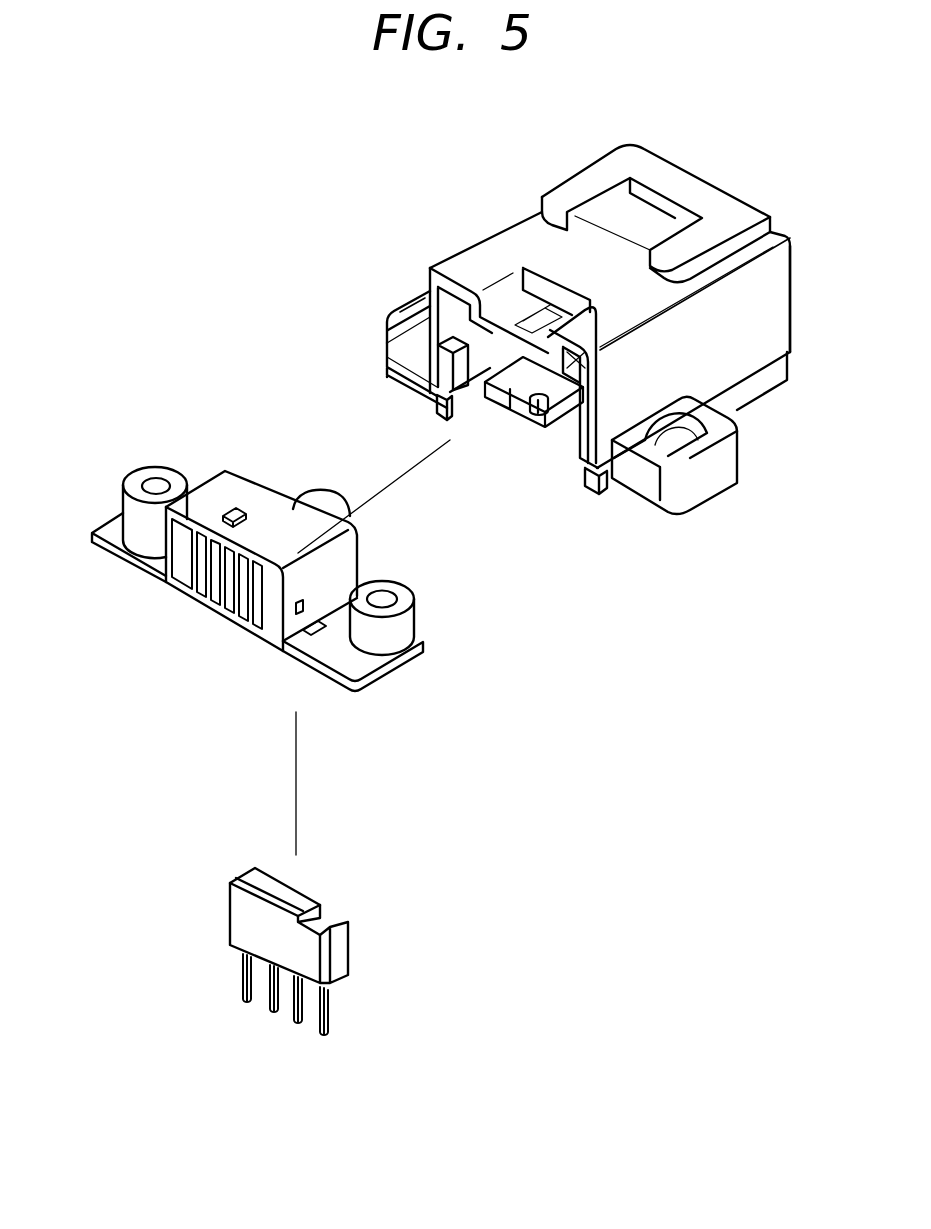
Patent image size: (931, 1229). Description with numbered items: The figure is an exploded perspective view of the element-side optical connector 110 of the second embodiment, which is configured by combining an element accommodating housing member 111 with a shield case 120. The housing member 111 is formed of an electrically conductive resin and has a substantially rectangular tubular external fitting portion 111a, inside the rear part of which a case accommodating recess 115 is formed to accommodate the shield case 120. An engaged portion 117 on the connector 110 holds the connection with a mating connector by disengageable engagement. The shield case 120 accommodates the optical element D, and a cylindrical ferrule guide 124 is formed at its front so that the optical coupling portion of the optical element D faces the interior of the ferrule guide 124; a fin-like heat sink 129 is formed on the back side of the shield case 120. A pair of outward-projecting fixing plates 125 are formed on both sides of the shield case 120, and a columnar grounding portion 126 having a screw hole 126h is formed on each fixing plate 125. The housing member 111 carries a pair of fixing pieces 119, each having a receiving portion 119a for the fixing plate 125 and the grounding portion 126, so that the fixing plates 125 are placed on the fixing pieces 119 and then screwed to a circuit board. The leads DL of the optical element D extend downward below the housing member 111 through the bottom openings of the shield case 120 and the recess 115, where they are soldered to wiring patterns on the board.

The element-side optical connector 110 is at (349, 199).
The element accommodating housing member 111 is at (512, 214).
The tubular external fitting portion 111a is at (792, 274).
The engaged portion 117 is at (657, 203).
The fixing piece 119 is at (388, 368).
The receiving portion 119a is at (412, 301).
The case accommodating recess 115 is at (562, 388).
The shield case 120 is at (246, 462).
The ferrule guide 124 is at (326, 492).
The heat sink 129 is at (213, 597).
The grounding portion 126 is at (125, 504).
The screw hole 126h is at (157, 485).
The fixing plate 125 is at (125, 550).
The optical element D is at (348, 946).
The leads DL is at (330, 1017).